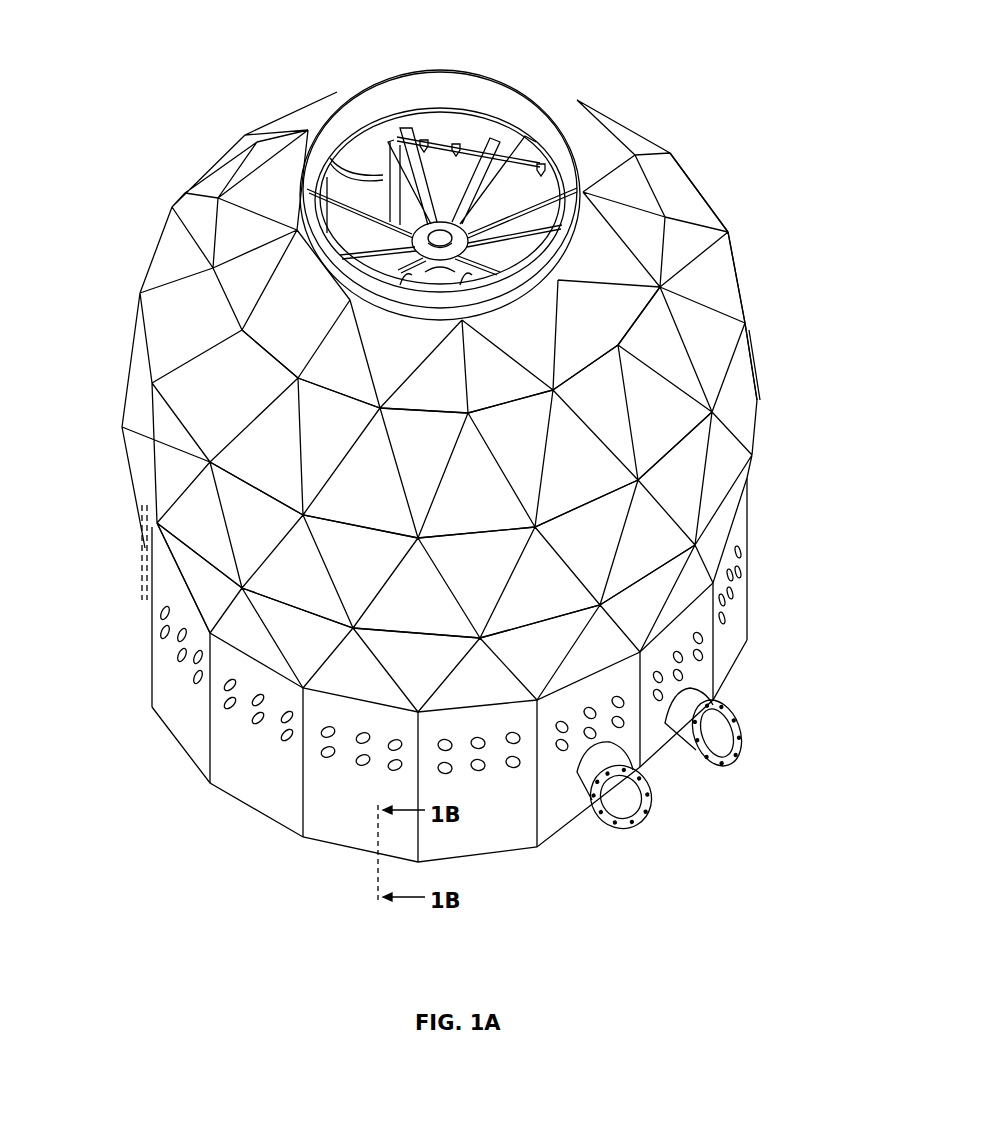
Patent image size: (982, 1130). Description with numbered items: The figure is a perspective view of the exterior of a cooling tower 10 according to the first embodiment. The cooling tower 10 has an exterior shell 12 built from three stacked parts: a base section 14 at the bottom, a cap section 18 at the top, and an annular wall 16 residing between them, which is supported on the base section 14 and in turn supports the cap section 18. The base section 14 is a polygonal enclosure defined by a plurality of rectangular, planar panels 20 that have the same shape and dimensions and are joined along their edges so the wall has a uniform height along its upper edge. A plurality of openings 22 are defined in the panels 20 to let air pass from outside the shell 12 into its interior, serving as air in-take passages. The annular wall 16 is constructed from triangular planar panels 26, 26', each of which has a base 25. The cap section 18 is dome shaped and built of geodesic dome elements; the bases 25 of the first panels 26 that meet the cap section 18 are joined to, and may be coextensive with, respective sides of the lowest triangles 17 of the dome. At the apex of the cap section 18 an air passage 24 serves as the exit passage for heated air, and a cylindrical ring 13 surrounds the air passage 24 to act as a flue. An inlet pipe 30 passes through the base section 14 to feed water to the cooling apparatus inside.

The cooling tower 10 is at (195, 70).
The exterior shell 12 is at (754, 488).
The cylindrical ring 13 is at (445, 95).
The base section 14 is at (748, 620).
The annular wall 16 is at (715, 530).
The lowest triangles 17 is at (177, 320).
The cap section 18 is at (745, 283).
The panels 20 is at (178, 717).
The openings 22 is at (160, 630).
The air passage 24 is at (485, 135).
The base 25 is at (140, 305).
The first panels 26 is at (439, 473).
The triangular panels 26' is at (380, 611).
The inlet pipe 30 is at (740, 728).